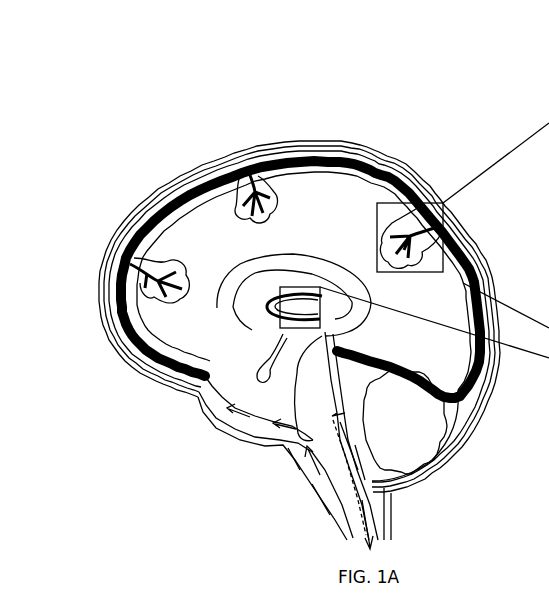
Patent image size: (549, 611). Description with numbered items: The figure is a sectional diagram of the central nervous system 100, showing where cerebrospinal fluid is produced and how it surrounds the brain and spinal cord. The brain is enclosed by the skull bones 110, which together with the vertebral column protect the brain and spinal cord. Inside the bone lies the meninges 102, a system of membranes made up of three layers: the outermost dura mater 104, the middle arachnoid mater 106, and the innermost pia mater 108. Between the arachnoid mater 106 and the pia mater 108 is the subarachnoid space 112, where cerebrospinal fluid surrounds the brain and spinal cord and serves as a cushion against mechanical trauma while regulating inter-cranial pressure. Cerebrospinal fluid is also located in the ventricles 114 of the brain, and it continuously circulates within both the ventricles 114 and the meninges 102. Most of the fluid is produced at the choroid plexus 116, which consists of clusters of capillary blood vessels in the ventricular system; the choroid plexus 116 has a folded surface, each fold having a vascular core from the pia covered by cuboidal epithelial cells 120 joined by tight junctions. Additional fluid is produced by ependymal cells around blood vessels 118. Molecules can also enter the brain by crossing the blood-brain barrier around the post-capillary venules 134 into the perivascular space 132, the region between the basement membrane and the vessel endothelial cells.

The central nervous system 100 is at (147, 22).
The meninges 102 is at (150, 212).
The dura mater 104 is at (140, 235).
The blood vessels 118 is at (130, 257).
The arachnoid mater 106 is at (122, 300).
The subarachnoid space 112 is at (142, 342).
The pia mater 108 is at (199, 400).
The skull bones 110 is at (380, 158).
The ventricles 114 is at (323, 259).
The choroid plexus 116 is at (263, 310).
The perivascular space 132 is at (198, 186).
The post-capillary venules 134 is at (237, 165).
The cuboidal epithelial cells 120 is at (343, 353).